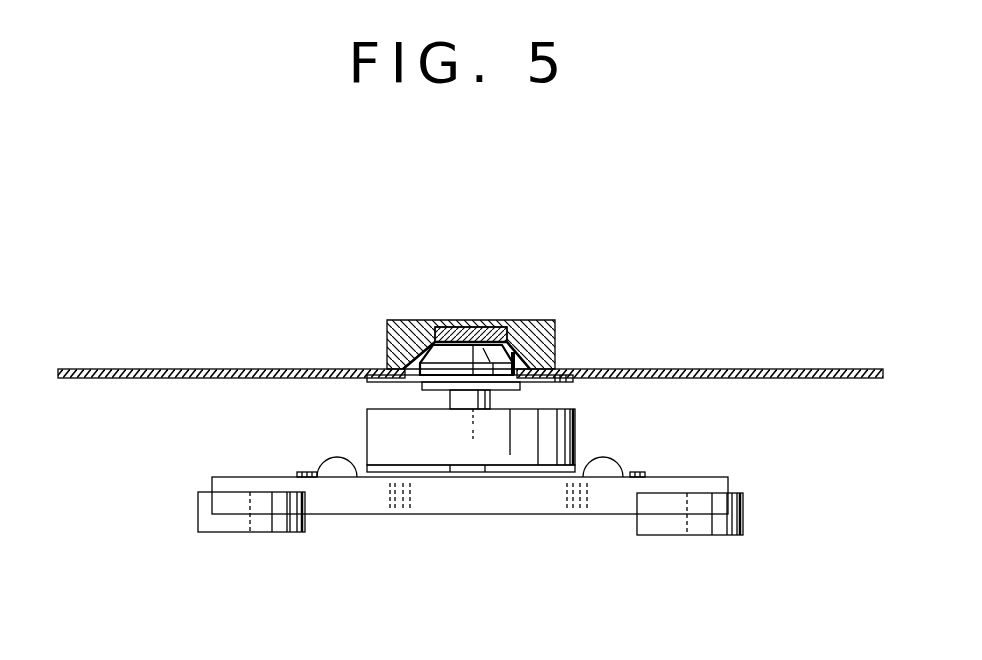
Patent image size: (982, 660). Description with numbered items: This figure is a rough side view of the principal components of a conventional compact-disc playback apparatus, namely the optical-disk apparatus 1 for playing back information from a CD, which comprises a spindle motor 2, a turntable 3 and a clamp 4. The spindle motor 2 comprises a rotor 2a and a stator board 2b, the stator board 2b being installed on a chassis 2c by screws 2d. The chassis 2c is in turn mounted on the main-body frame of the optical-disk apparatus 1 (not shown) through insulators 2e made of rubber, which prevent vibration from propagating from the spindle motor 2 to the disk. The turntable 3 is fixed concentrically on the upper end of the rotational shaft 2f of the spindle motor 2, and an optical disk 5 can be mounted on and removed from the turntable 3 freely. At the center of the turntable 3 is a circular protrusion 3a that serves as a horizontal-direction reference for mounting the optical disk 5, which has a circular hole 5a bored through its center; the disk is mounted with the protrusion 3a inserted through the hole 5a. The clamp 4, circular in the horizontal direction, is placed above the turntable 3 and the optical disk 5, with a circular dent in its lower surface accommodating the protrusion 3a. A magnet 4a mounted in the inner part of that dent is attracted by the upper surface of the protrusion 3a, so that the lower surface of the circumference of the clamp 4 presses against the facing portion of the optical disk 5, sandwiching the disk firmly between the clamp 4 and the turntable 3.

The optical-disk apparatus 1 is at (135, 305).
The spindle motor 2 is at (328, 438).
The rotor 2a is at (443, 455).
The stator board 2b is at (372, 477).
The chassis 2c is at (598, 497).
The screws 2d is at (603, 467).
The insulators 2e is at (252, 532).
The rotational shaft 2f is at (458, 398).
The turntable 3 is at (504, 344).
The circular protrusion 3a is at (422, 341).
The clamp 4 is at (471, 318).
The magnet 4a is at (472, 326).
The optical disk 5 is at (762, 369).
The circular hole 5a is at (520, 360).